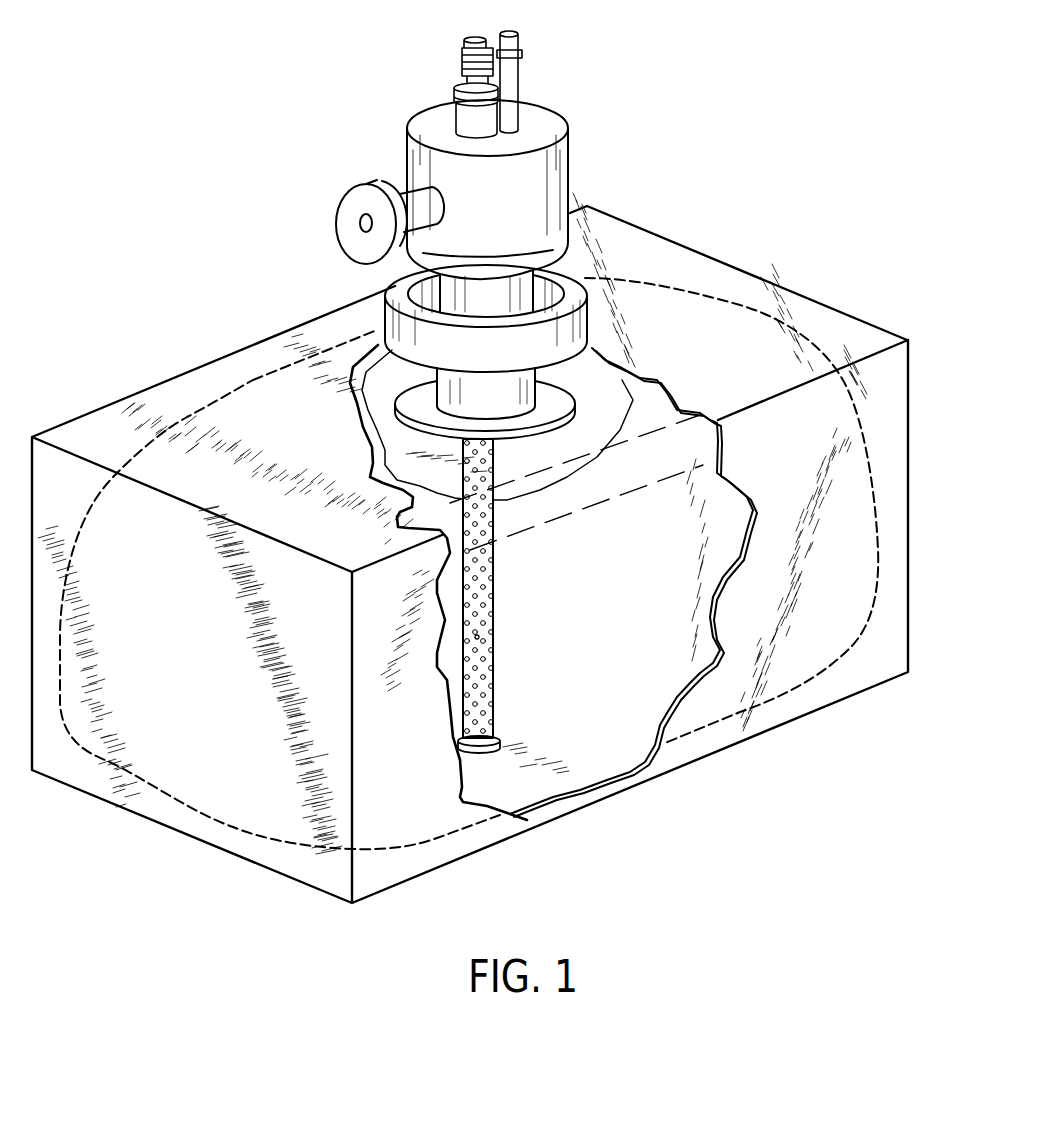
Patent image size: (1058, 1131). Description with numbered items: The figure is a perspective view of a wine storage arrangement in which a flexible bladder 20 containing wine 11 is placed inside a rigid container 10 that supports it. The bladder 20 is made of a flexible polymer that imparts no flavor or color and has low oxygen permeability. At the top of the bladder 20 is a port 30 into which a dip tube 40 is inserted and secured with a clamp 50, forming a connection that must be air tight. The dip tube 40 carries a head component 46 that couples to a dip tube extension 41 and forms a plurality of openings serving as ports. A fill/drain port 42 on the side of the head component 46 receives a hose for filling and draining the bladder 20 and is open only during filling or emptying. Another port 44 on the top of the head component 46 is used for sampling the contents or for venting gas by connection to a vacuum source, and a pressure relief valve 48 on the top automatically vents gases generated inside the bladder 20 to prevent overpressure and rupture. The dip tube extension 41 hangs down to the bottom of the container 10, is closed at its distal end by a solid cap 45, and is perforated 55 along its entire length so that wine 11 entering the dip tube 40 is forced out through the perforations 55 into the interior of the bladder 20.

The rigid container 10 is at (908, 610).
The wine 11 is at (600, 393).
The bladder 20 is at (667, 443).
The port 30 is at (420, 382).
The dip tube 40 is at (570, 400).
The dip tube extension 41 is at (479, 723).
The fill/drain port 42 is at (340, 238).
The port 44 is at (458, 54).
The solid cap 45 is at (500, 742).
The head component 46 is at (567, 190).
The pressure relief valve 48 is at (520, 62).
The clamp 50 is at (588, 305).
The perforations 55 is at (477, 637).